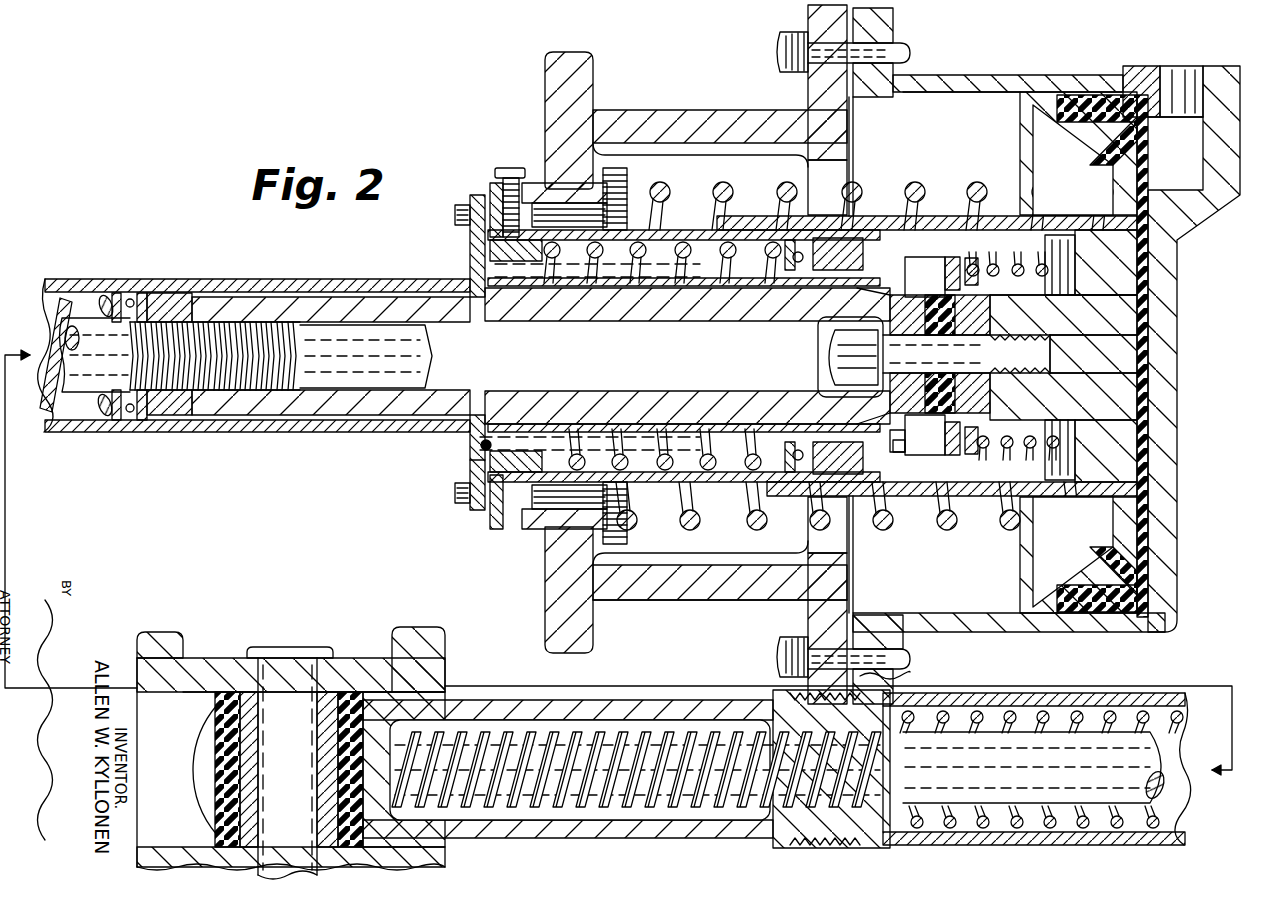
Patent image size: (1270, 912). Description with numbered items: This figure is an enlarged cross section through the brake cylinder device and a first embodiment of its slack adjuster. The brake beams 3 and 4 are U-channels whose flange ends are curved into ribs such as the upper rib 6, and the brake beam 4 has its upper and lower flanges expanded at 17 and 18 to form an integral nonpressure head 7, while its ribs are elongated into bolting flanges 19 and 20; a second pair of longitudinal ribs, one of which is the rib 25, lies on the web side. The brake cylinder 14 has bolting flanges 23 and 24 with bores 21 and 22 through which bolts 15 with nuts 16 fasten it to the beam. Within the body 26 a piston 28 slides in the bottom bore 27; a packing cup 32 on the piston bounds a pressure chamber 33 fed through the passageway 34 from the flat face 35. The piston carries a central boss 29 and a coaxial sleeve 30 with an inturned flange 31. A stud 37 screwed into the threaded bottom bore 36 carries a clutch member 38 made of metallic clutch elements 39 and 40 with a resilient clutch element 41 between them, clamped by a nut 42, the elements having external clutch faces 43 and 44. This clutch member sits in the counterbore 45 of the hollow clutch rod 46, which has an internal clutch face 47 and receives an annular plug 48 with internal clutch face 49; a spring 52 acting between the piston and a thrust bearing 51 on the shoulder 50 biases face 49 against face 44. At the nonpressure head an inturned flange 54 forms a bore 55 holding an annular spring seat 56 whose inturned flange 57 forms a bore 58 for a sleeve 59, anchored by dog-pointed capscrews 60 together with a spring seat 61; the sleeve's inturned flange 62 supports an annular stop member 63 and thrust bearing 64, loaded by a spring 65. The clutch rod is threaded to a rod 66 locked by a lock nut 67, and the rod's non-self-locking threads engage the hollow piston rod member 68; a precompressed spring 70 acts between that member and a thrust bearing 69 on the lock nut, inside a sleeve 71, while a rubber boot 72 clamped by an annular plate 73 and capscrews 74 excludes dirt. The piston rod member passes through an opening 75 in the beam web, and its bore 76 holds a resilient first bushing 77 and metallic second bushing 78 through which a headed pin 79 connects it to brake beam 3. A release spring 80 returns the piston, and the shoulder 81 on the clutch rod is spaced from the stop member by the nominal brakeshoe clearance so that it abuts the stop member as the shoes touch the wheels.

The brake beam 3 is at (205, 666).
The brake beam 4 is at (701, 603).
The upper rib 6 is at (165, 636).
The nonpressure head 7 is at (705, 126).
The brake cylinder 14 is at (1060, 75).
The bolt 15 is at (908, 53).
The nut 16 is at (790, 45).
The expanded upper flange 17 is at (620, 122).
The expanded lower flange 18 is at (630, 586).
The bolting flange 19 is at (812, 20).
The bolting flange 20 is at (786, 672).
The bore 21 is at (893, 38).
The bore 22 is at (855, 630).
The bolting flange 23 is at (893, 14).
The bolting flange 24 is at (905, 671).
The longitudinal rib 25 is at (560, 72).
The brake cylinder body 26 is at (1010, 82).
The bottom bore 27 is at (978, 92).
The piston 28 is at (1120, 338).
The central boss 29 is at (1035, 442).
The coaxial sleeve 30 is at (935, 222).
The inturned flange 31 is at (740, 222).
The packing cup 32 is at (1150, 300).
The pressure chamber 33 is at (1208, 152).
The passageway 34 is at (1182, 82).
The flat face 35 is at (1140, 68).
The screw-threaded bottom bore 36 is at (1012, 345).
The stud 37 is at (968, 442).
The clutch member 38 is at (868, 422).
The metallic annular clutch element 39 is at (870, 282).
The metallic annular clutch element 40 is at (990, 330).
The resilient clutch element 41 is at (948, 260).
The nut 42 is at (826, 340).
The external clutch face 43 is at (892, 318).
The external clutch face 44 is at (1016, 266).
The counterbore 45 is at (915, 258).
The hollow clutch rod 46 is at (386, 300).
The internal clutch face 47 is at (830, 380).
The annular plug 48 is at (1058, 300).
The internal clutch face 49 is at (992, 446).
The shoulder 50 is at (928, 452).
The thrust bearing 51 is at (968, 260).
The spring 52 is at (1068, 262).
The inturned flange 54 is at (546, 152).
The bore 55 is at (542, 521).
The annular spring seat 56 is at (521, 180).
The inturned flange 57 is at (503, 503).
The bore 58 is at (548, 472).
The sleeve 59 is at (663, 472).
The dog-pointed capscrew 60 is at (498, 174).
The annular spring seat 61 is at (475, 251).
The inturned flange 62 is at (860, 250).
The annular stop member 63 is at (820, 232).
The thrust bearing 64 is at (797, 462).
The spring 65 is at (683, 243).
The rod 66 is at (425, 350).
The lock nut 67 is at (165, 294).
The hollow piston rod member 68 is at (206, 795).
The thrust bearing 69 is at (130, 298).
The precompressed spring 70 is at (60, 303).
The sleeve 71 is at (227, 286).
The rubber boot 72 is at (478, 447).
The annular plate 73 is at (478, 470).
The capscrew 74 is at (455, 213).
The opening 75 is at (400, 660).
The bore 76 is at (216, 760).
The first bushing 77 is at (226, 712).
The second bushing 78 is at (216, 736).
The headed pin 79 is at (290, 650).
The release spring 80 is at (950, 522).
The shoulder 81 is at (893, 452).